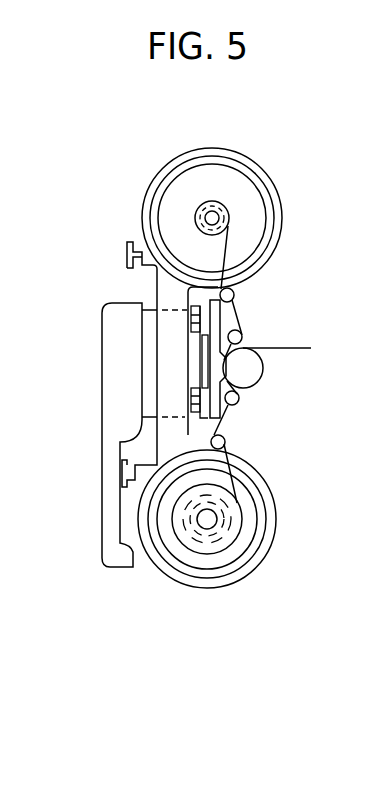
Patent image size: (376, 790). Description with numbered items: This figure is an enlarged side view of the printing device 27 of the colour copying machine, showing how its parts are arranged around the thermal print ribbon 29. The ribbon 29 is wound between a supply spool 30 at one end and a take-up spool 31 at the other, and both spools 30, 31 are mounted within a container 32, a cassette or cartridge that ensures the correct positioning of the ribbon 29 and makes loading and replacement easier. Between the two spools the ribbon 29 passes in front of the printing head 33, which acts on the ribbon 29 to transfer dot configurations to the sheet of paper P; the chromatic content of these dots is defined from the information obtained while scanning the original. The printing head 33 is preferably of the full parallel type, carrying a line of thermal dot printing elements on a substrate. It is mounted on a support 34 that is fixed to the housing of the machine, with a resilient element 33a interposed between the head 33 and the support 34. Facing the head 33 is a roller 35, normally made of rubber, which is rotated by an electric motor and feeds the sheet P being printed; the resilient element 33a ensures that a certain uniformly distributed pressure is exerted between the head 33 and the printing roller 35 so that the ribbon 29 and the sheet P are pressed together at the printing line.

The printing device 27 is at (88, 521).
The thermal print ribbon 29 is at (199, 298).
The supply spool 30 is at (223, 157).
The take-up spool 31 is at (192, 540).
The container 32 is at (292, 191).
The printing head 33 is at (203, 392).
The resilient element 33a is at (150, 397).
The support 34 is at (123, 380).
The roller 35 is at (246, 370).
The sheet of paper P is at (293, 347).